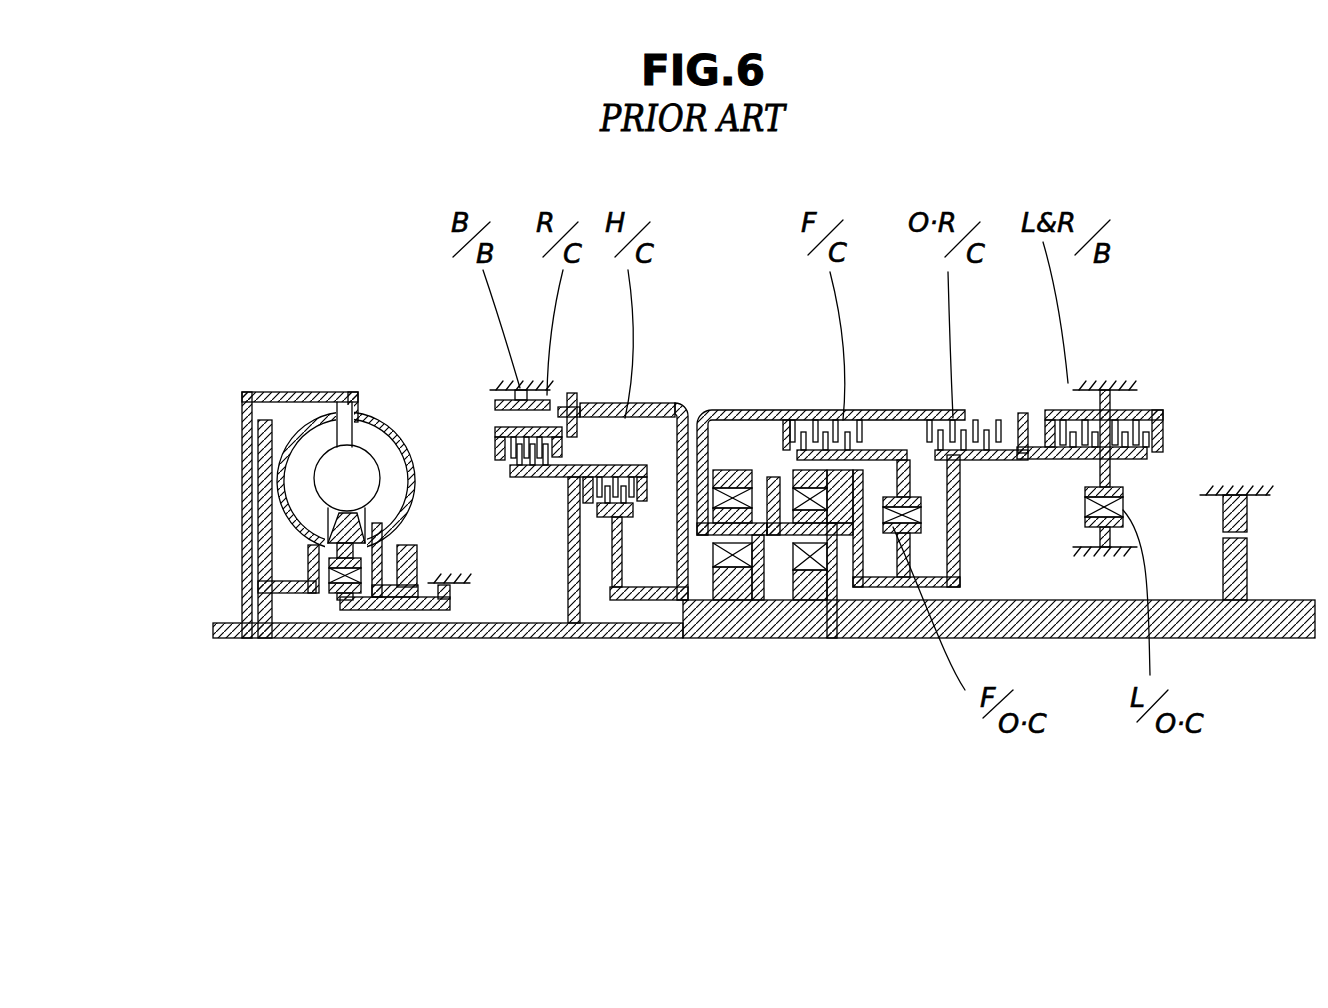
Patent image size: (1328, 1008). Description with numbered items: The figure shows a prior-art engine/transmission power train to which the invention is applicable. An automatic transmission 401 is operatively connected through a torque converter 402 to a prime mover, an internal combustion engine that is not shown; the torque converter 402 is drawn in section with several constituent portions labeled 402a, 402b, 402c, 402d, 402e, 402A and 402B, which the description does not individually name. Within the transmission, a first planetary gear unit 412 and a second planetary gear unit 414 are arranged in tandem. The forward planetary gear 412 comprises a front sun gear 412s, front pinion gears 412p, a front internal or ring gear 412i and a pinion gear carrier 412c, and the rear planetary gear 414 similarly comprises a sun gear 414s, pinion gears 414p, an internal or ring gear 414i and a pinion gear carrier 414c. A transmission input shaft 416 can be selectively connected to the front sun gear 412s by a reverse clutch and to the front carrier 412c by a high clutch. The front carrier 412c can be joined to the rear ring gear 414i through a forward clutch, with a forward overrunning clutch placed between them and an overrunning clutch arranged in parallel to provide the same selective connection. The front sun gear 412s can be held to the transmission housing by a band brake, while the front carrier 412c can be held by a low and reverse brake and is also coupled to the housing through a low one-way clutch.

The automatic transmission 401 is at (752, 188).
The torque converter 402 is at (312, 422).
The torque converter housing (pump cover) 402a is at (253, 390).
The turbine 402b is at (380, 445).
The input shaft 402c is at (318, 440).
The stator 402d is at (348, 528).
The front cover wall 402e is at (267, 480).
The torus (fluid circuit) 402A is at (350, 392).
The converter housing 402B is at (257, 530).
The first planetary gear unit 412 is at (765, 499).
The front internal or ring gear 412i is at (735, 472).
The front sun gear 412s is at (735, 548).
The front pinion gears 412p is at (733, 540).
The pinion gear carrier 412c is at (768, 590).
The second planetary gear unit 414 is at (850, 527).
The rear ring gear 414i is at (797, 470).
The sun gear 414s is at (798, 590).
The pinion gears 414p is at (827, 540).
The pinion gear carrier 414c is at (838, 558).
The transmission input shaft 416 is at (480, 637).